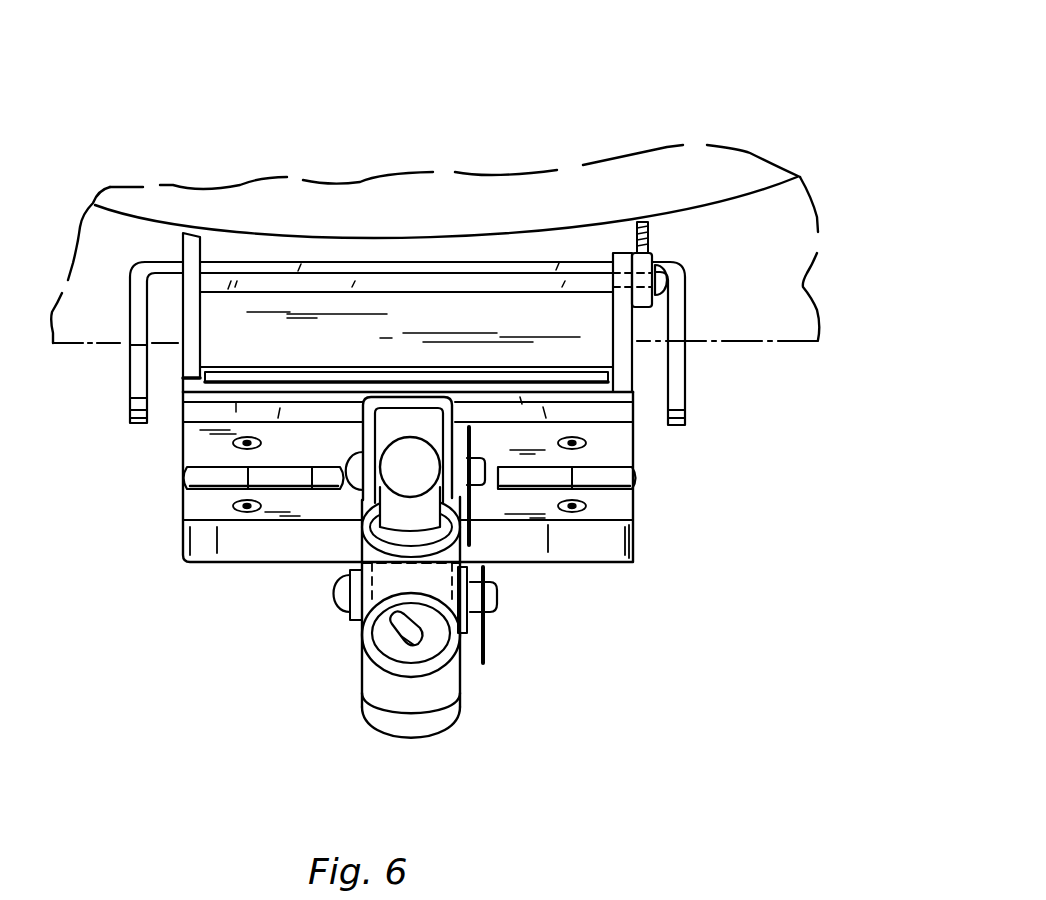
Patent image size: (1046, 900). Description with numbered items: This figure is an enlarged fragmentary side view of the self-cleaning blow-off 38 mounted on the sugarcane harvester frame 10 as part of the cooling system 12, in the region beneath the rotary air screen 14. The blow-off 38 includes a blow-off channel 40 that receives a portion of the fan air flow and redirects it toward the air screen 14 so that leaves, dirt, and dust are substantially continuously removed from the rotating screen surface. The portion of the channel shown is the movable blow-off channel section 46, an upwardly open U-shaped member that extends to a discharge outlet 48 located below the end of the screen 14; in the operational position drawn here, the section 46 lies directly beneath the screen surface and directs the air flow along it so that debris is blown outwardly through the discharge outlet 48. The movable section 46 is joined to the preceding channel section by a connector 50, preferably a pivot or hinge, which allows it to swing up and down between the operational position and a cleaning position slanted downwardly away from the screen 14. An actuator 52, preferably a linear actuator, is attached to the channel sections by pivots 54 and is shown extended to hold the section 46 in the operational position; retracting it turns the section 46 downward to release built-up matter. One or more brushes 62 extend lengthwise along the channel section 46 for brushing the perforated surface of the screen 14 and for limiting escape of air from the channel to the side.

The sugarcane harvester frame 10 is at (610, 90).
The cooling system 12 is at (813, 195).
The rotary air screen 14 is at (747, 195).
The self-cleaning blow-off 38 is at (633, 558).
The blow-off channel 40 is at (585, 562).
The movable blow-off channel section 46 is at (208, 395).
The discharge outlet 48 is at (567, 357).
The connector 50 is at (633, 500).
The actuator 52 is at (457, 693).
The pivots 54 is at (350, 478).
The brushes 62 is at (652, 236).